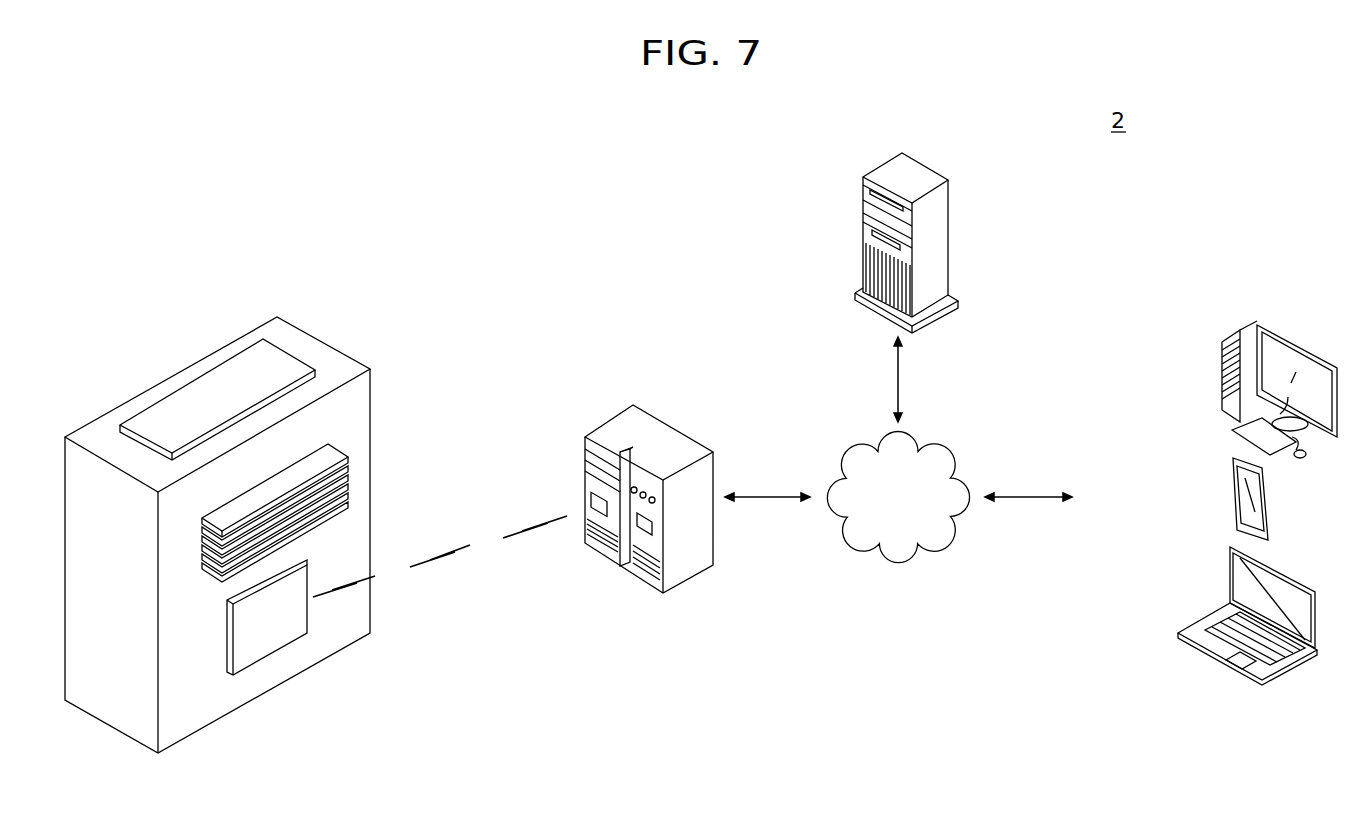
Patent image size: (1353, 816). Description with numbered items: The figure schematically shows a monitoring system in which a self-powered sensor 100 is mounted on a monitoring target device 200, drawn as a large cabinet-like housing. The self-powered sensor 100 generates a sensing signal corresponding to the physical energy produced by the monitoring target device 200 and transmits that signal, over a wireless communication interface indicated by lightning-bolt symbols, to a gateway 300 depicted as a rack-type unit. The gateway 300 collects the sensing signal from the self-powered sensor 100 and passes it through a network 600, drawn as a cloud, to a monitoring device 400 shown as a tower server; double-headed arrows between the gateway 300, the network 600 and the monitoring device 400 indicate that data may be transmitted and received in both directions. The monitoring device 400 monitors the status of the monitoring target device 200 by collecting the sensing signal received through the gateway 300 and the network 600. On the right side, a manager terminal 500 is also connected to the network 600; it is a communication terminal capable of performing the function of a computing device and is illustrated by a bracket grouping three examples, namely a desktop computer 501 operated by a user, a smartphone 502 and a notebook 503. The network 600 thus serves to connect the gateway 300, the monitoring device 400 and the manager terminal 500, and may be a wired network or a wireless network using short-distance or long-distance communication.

The self-powered sensor 100 is at (272, 653).
The monitoring target device 200 is at (315, 348).
The gateway 300 is at (665, 433).
The monitoring device 400 is at (917, 170).
The manager terminal 500 is at (1141, 388).
The desktop computer 501 is at (1220, 378).
The smartphone 502 is at (1233, 490).
The notebook 503 is at (1212, 620).
The network 600 is at (948, 447).